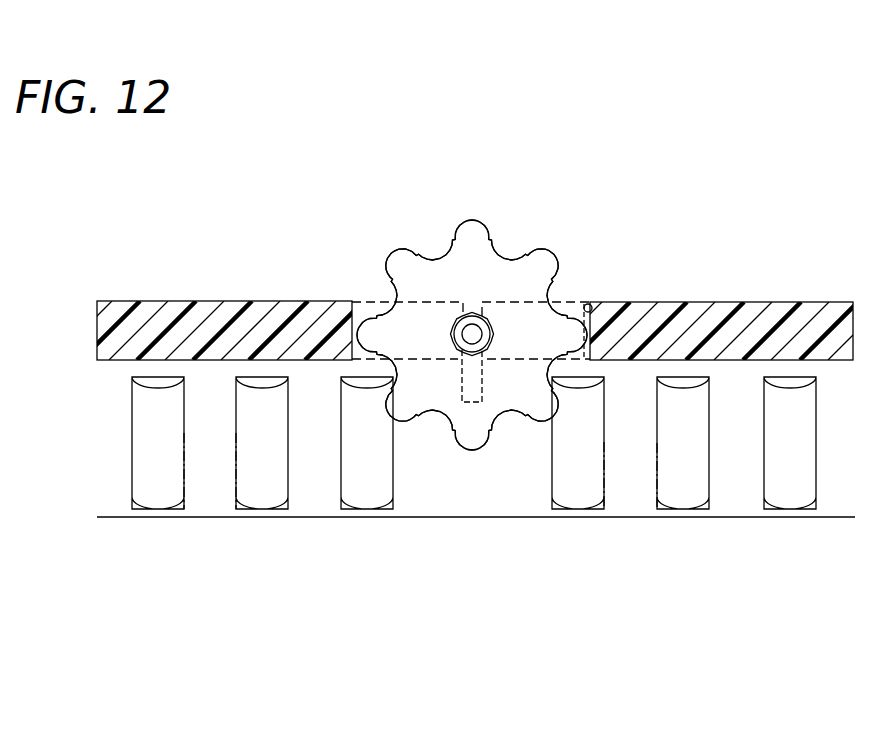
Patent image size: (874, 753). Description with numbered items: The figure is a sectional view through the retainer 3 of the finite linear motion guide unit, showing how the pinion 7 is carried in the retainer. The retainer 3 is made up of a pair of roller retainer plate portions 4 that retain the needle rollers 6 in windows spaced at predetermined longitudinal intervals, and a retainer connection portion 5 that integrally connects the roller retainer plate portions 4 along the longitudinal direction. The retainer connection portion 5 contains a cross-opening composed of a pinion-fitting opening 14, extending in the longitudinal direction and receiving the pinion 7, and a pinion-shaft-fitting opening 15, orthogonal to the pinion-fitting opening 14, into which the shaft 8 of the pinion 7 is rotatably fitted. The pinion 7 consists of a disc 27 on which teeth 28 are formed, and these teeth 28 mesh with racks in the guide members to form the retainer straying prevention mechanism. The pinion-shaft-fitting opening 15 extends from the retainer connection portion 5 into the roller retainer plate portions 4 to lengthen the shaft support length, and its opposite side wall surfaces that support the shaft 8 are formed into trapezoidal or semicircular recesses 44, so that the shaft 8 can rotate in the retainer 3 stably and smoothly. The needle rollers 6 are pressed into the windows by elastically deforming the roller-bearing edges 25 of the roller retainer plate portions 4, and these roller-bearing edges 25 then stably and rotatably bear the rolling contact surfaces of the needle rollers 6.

The retainer 3 is at (737, 301).
The roller retainer plate portion 4 is at (423, 488).
The retainer connection portion 5 is at (266, 310).
The needle roller 6 is at (257, 475).
The pinion 7 is at (440, 288).
The shaft 8 is at (482, 326).
The pinion-fitting opening 14 is at (403, 328).
The pinion-shaft-fitting opening 15 is at (466, 322).
The roller-bearing edge 25 is at (236, 433).
The disc 27 is at (493, 400).
The teeth 28 is at (582, 304).
The recess 44 is at (483, 403).